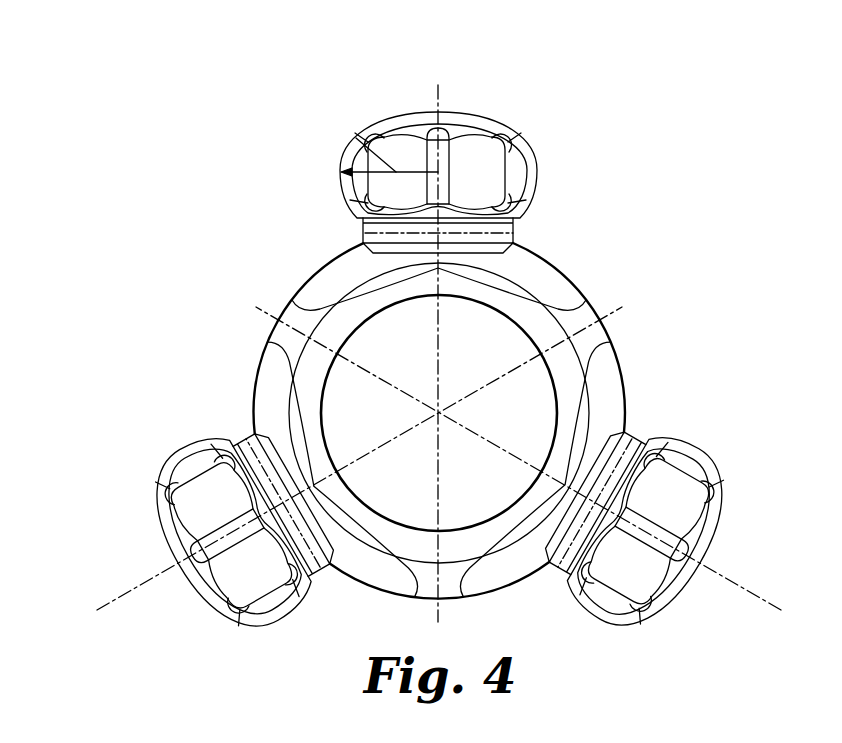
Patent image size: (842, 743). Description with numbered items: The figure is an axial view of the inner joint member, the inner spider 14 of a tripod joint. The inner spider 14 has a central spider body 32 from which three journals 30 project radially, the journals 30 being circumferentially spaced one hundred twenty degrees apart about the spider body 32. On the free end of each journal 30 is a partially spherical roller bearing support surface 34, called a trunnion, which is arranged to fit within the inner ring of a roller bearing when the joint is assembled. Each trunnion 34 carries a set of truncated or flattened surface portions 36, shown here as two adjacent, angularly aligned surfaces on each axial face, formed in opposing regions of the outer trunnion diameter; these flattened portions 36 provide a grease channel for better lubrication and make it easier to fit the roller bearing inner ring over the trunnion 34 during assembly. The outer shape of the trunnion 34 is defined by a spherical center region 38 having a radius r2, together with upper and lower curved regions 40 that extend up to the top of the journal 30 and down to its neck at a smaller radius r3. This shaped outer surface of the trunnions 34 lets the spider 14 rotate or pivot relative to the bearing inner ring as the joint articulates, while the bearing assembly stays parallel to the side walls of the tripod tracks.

The inner spider 14 is at (605, 245).
The journal 30 is at (481, 106).
The spider body 32 is at (302, 298).
The roller bearing support surface 34 is at (538, 168).
The truncated surface portion 36 is at (483, 160).
The spherical center region 38 is at (340, 172).
The curved region 40 is at (358, 138).
The radius r2 is at (363, 222).
The radius r3 is at (396, 170).